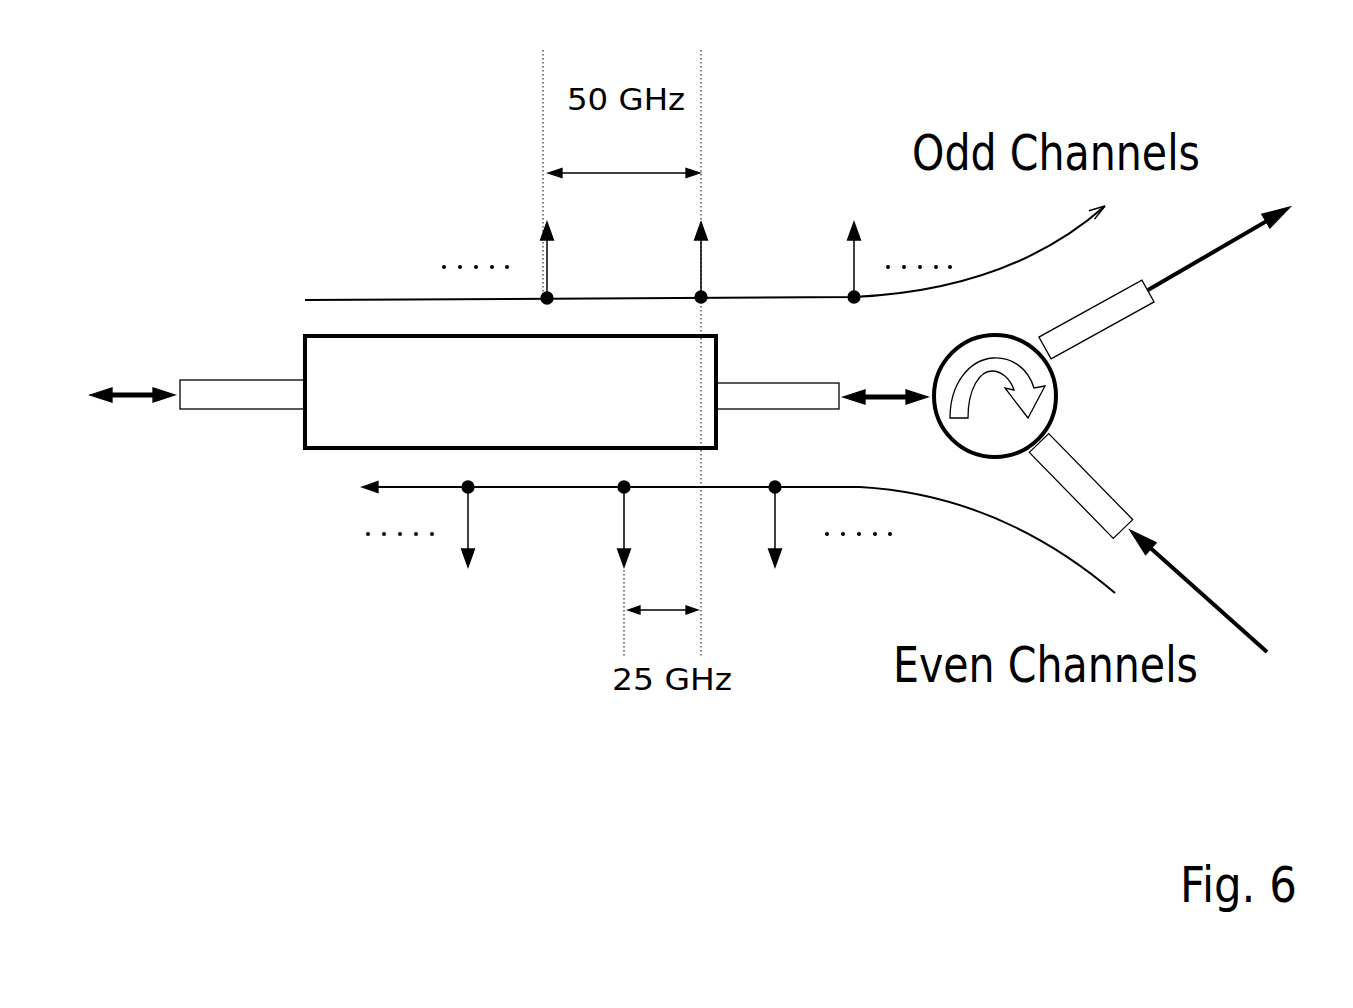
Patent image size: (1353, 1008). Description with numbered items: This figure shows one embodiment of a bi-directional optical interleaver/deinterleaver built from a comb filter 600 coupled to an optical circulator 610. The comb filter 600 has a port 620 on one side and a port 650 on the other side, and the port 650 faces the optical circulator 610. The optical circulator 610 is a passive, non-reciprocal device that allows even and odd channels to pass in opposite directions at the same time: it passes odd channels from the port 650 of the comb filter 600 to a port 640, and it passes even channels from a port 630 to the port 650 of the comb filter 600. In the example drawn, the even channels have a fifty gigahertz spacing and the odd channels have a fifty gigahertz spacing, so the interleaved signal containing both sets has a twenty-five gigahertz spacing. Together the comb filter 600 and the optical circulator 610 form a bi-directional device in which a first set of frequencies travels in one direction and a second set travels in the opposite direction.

The comb filter 600 is at (642, 431).
The optical circulator 610 is at (1065, 397).
The input/output port of comb filter 620 is at (245, 412).
The port 630 is at (1093, 477).
The port 640 is at (1102, 337).
The port 650 is at (778, 378).